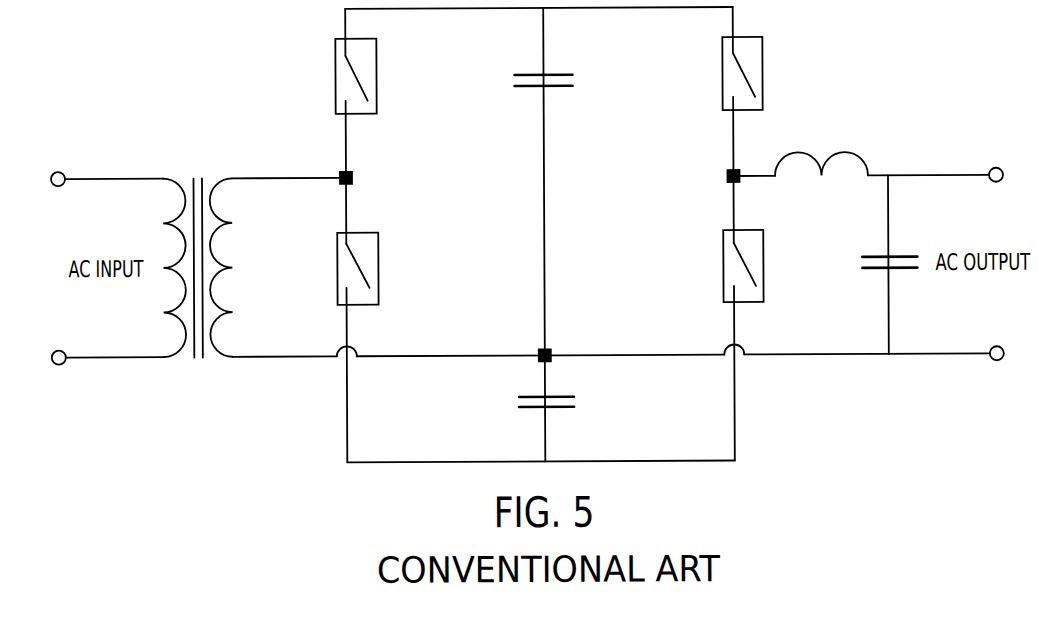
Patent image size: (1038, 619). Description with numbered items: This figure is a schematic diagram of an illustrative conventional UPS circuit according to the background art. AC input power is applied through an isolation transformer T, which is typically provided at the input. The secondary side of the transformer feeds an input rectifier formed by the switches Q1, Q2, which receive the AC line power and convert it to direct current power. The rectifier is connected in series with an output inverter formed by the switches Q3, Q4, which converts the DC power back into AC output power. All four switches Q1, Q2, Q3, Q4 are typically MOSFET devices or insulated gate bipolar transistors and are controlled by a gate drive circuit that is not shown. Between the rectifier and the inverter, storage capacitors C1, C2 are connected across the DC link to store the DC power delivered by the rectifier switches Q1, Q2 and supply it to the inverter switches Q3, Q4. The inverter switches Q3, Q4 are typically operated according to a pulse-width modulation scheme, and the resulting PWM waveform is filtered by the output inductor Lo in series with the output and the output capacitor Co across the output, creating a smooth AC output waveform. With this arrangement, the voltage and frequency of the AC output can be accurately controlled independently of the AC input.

The isolation transformer T is at (193, 175).
The input rectifier switch Q1 is at (338, 93).
The input rectifier switch Q2 is at (340, 320).
The output inverter switch Q3 is at (725, 91).
The output inverter switch Q4 is at (727, 318).
The storage capacitor C1 is at (527, 88).
The storage capacitor C2 is at (530, 408).
The output inductor Lo is at (842, 152).
The output capacitor Co is at (880, 254).